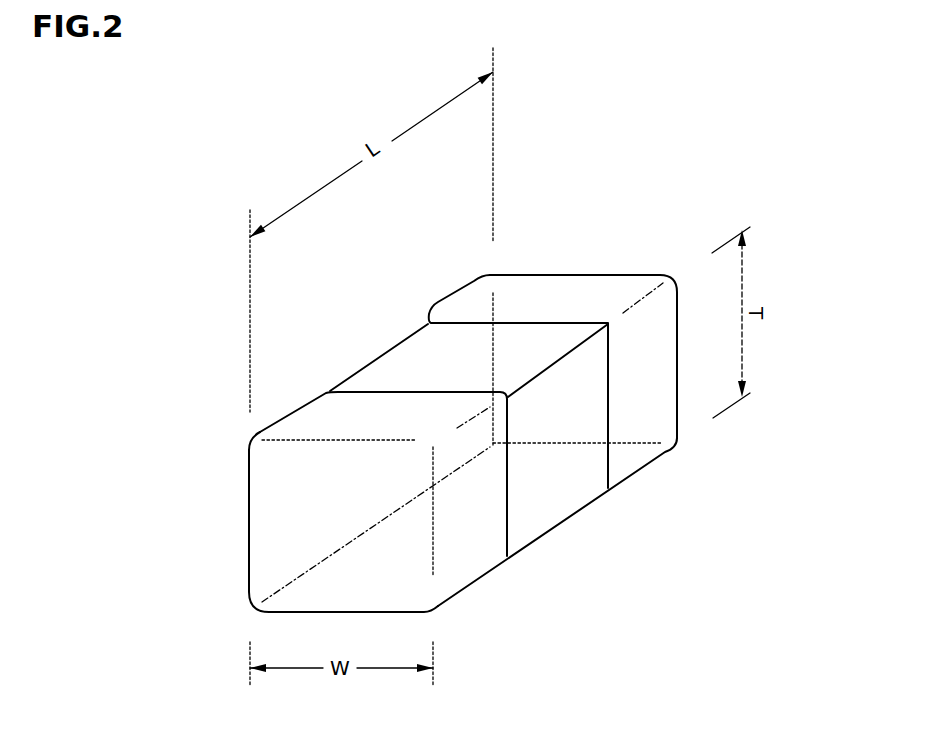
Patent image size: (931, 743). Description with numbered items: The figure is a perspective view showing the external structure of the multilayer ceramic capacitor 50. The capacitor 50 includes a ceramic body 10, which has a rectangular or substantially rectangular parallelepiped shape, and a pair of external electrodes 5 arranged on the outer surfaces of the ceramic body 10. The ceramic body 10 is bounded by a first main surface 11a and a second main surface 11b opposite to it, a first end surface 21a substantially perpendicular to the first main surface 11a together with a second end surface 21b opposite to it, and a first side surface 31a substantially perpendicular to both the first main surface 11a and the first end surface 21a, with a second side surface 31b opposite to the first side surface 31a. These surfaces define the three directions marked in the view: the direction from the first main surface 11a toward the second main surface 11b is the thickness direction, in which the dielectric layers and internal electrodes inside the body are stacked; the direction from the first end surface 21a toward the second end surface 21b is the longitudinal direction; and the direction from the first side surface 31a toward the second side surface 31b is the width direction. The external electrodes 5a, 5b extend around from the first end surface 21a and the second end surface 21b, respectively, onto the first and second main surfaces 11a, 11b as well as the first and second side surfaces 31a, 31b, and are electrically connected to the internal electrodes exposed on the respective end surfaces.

The multilayer ceramic capacitor 50 is at (457, 403).
The ceramic body 10 is at (568, 512).
The external electrodes 5 is at (572, 490).
The external electrode 5a is at (453, 545).
The external electrode 5b is at (650, 398).
The first end surface 21a is at (297, 533).
The second end surface 21b is at (588, 307).
The first main surface 11a is at (392, 380).
The second main surface 11b is at (525, 512).
The first side surface 31a is at (425, 360).
The second side surface 31b is at (557, 460).